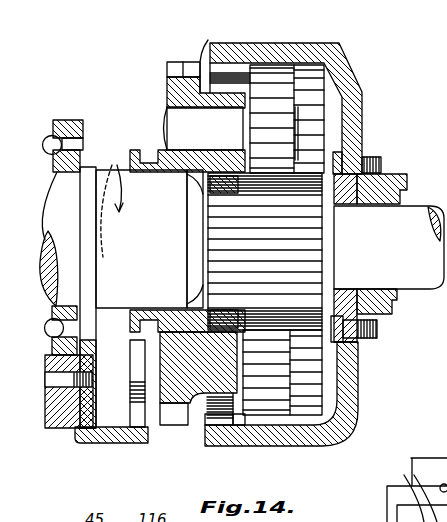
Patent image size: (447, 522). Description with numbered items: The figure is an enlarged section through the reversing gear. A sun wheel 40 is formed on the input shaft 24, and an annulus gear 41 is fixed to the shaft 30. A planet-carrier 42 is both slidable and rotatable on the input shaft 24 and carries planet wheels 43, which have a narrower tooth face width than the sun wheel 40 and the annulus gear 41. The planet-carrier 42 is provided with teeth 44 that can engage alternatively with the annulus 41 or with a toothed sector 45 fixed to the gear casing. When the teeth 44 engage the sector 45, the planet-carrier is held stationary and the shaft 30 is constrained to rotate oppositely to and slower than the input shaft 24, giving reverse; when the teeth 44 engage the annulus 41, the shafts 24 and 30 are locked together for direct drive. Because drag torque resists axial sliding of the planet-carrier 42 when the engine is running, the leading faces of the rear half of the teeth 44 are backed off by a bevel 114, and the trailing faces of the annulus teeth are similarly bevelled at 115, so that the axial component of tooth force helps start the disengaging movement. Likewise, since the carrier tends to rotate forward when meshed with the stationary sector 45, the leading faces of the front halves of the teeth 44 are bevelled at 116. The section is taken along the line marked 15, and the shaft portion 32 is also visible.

The section line 15 is at (25, 413).
The input shaft 24 is at (117, 241).
The shaft 30 is at (375, 247).
The shaft 32 is at (410, 277).
The sun wheel 40 is at (322, 170).
The annulus gear 41 is at (268, 438).
The planet-carrier 42 is at (162, 424).
The planet wheels 43 is at (326, 113).
The teeth 44 is at (178, 418).
The toothed sector 45 is at (100, 433).
The bevel 114 is at (197, 66).
The bevel 115 is at (217, 427).
The bevel 116 is at (172, 62).